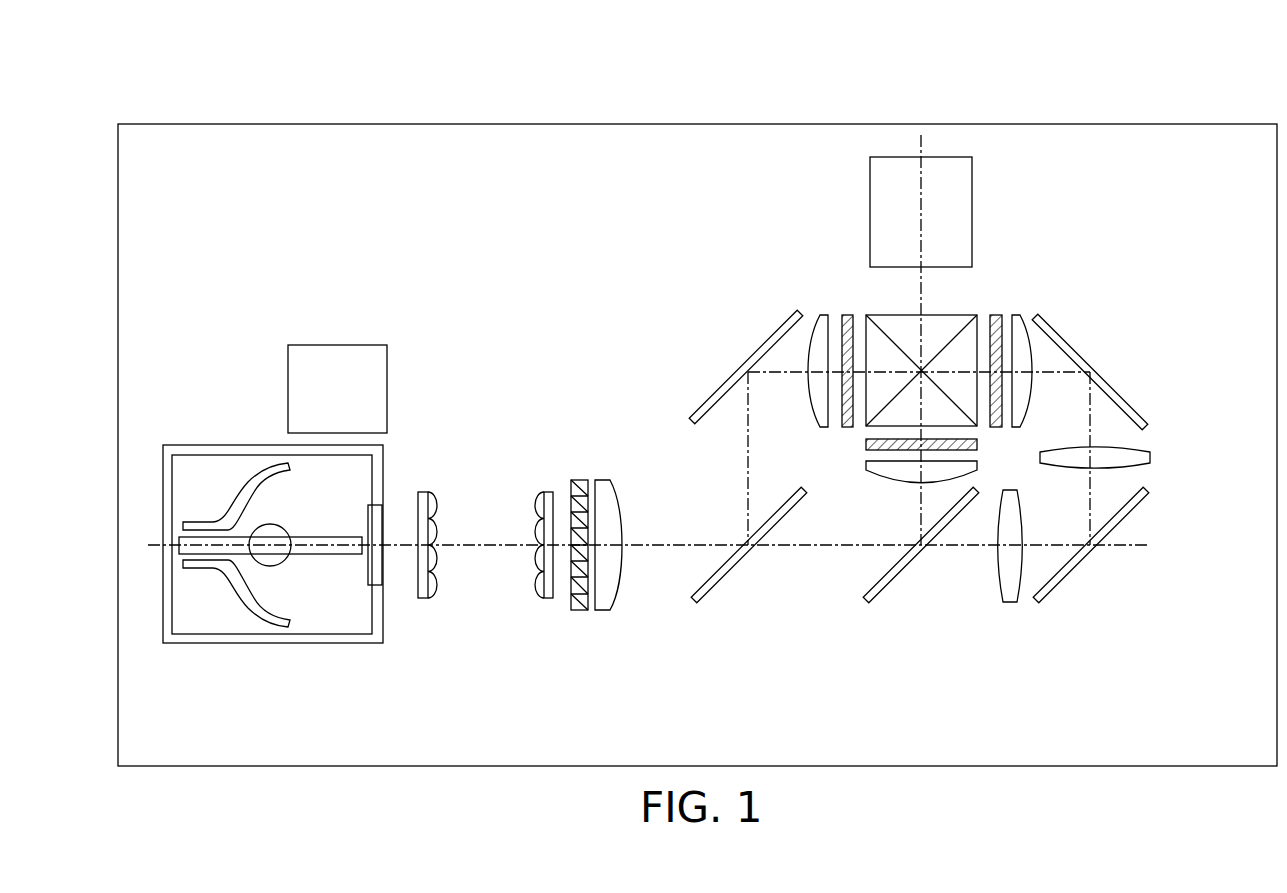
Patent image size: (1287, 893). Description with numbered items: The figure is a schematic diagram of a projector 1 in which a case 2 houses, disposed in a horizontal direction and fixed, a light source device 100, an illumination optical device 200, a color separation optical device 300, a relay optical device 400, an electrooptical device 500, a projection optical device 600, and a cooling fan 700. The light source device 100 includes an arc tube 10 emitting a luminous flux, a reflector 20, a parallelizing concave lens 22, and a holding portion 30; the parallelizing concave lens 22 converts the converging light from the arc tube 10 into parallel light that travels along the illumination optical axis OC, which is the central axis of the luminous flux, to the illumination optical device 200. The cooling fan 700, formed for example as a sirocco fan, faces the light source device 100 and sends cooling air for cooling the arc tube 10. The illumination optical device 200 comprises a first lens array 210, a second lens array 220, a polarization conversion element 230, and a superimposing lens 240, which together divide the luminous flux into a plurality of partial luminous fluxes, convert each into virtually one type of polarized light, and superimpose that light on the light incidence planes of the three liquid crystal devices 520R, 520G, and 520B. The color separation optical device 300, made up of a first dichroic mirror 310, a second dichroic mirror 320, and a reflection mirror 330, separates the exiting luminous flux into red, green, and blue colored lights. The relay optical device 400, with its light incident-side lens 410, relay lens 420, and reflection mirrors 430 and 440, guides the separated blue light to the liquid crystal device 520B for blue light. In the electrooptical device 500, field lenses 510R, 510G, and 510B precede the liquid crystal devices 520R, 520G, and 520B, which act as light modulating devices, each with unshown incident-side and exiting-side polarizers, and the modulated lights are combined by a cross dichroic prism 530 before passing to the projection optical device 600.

The projector 1 is at (270, 90).
The case 2 is at (513, 124).
The arc tube 10 is at (286, 524).
The reflector 20 is at (224, 506).
The parallelizing concave lens 22 is at (370, 567).
The holding portion 30 is at (212, 445).
The light source device 100 is at (273, 554).
The illumination optical device 200 is at (550, 613).
The first lens array 210 is at (428, 598).
The second lens array 220 is at (544, 598).
The polarization conversion element 230 is at (580, 610).
The superimposing lens 240 is at (633, 591).
The color separation optical device 300 is at (831, 512).
The first dichroic mirror 310 is at (740, 575).
The second dichroic mirror 320 is at (905, 572).
The reflection mirror 330 is at (746, 362).
The relay optical device 400 is at (1115, 514).
The light incident-side lens 410 is at (1010, 602).
The relay lens 420 is at (1153, 460).
The reflection mirror 430 is at (1083, 563).
The reflection mirror 440 is at (1095, 362).
The electrooptical device 500 is at (912, 327).
The field lens 510R is at (823, 315).
The field lens 510G is at (862, 472).
The field lens 510B is at (1020, 313).
The liquid crystal device 520R is at (847, 315).
The liquid crystal device 520G is at (862, 444).
The liquid crystal device 520B is at (995, 315).
The cross dichroic prism 530 is at (877, 315).
The projection optical device 600 is at (973, 200).
The cooling fan 700 is at (358, 345).
The illumination optical axis OC is at (487, 545).